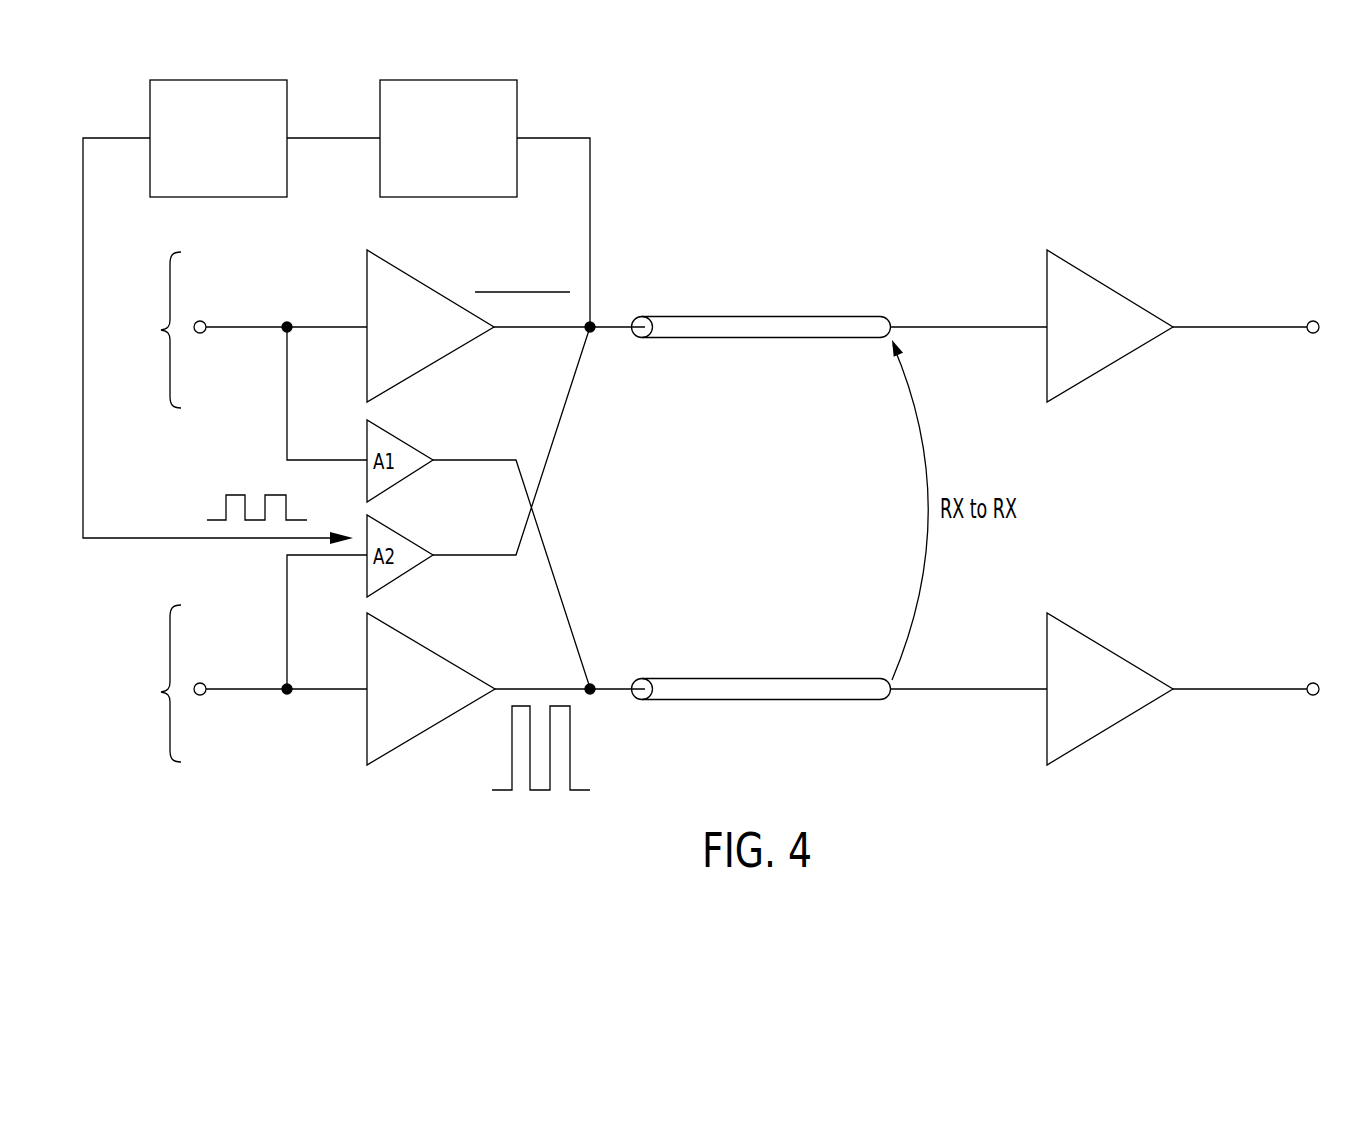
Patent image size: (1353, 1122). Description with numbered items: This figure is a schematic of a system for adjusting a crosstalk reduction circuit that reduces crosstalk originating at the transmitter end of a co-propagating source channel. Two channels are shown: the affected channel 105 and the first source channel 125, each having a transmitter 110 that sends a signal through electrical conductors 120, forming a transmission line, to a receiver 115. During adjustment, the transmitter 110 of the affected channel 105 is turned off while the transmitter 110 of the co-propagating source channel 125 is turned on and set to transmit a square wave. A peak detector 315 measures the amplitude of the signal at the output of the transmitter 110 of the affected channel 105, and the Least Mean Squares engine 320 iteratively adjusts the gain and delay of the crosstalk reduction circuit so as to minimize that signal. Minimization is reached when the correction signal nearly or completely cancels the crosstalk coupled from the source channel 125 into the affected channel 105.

The affected communications channel 105 is at (232, 330).
The first source channel 125 is at (232, 683).
The transmitter 110 is at (458, 300).
The Least Mean Squares engine 320 is at (235, 197).
The peak detector 315 is at (450, 197).
The electrical conductors 120 is at (764, 315).
The receiver 115 is at (1135, 302).